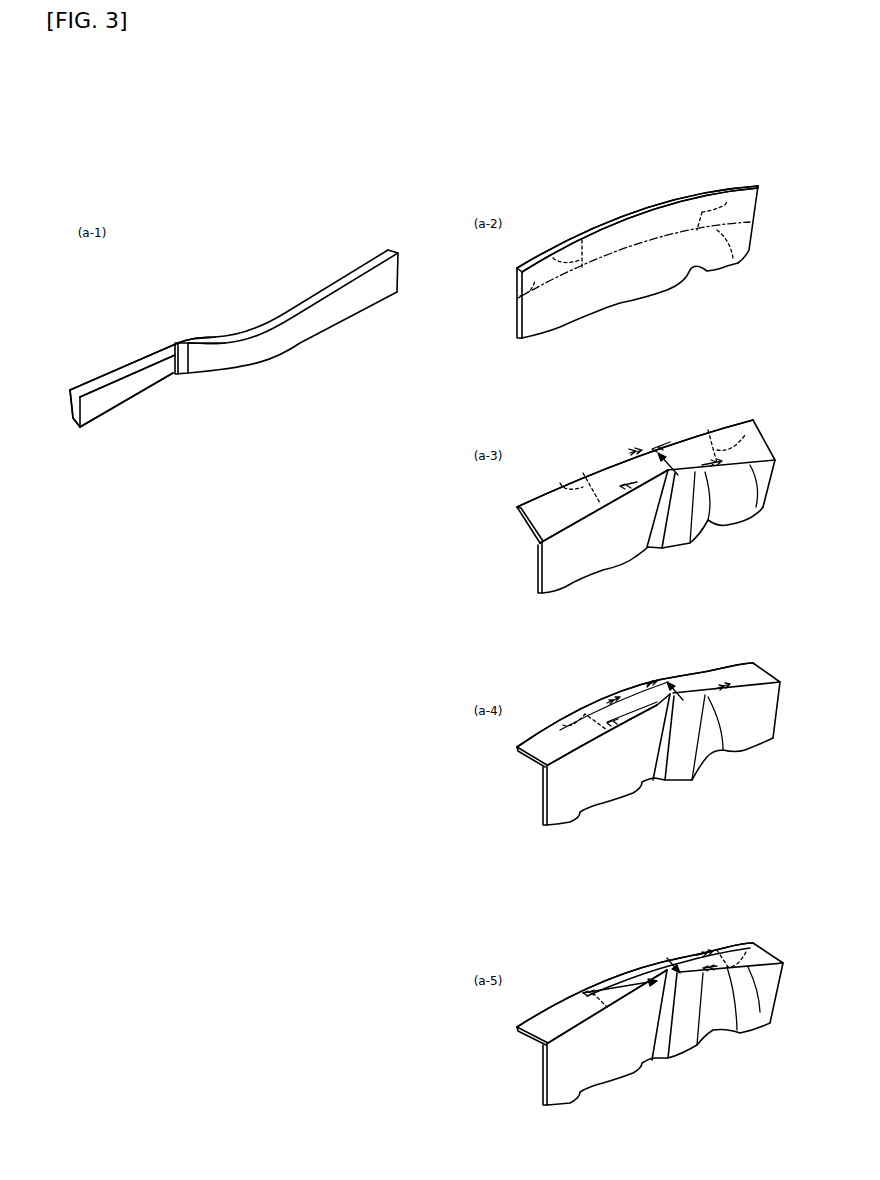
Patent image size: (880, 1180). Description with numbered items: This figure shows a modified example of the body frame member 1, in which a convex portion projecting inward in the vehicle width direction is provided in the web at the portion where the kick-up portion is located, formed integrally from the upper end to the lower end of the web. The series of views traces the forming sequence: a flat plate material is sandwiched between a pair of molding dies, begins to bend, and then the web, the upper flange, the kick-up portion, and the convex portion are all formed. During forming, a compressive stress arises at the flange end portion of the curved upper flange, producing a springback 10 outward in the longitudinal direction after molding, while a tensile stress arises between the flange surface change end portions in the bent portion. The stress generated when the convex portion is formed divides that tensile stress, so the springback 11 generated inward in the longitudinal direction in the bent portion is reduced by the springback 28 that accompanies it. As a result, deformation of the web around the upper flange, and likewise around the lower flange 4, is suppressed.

The body frame member 1 is at (377, 242).
The lower flange 4 is at (73, 418).
The springback 10 is at (643, 965).
The springback 11 is at (738, 1031).
The springback 28 is at (672, 972).